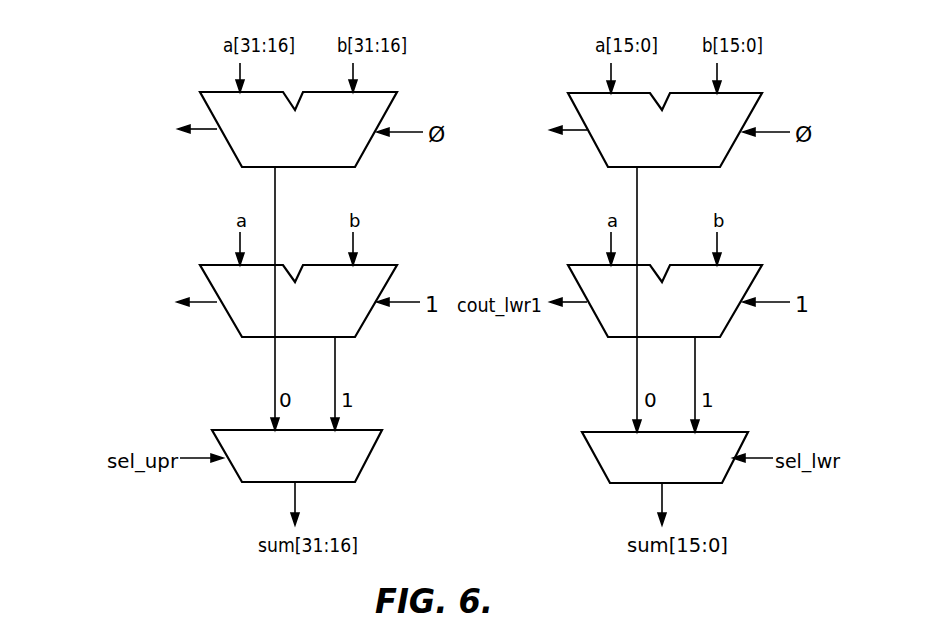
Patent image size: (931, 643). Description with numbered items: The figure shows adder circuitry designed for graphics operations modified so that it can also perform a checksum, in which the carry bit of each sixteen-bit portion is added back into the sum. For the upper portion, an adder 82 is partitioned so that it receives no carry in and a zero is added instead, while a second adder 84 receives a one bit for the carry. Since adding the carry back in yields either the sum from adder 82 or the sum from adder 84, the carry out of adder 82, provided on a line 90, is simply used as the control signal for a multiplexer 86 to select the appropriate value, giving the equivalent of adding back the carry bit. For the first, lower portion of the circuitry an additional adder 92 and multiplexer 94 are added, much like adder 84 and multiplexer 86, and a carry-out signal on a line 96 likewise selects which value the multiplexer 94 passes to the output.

The adder 82 is at (397, 92).
The second adder 84 is at (397, 265).
The multiplexer 86 is at (382, 430).
The line 90 is at (188, 127).
The additional adder 92 is at (772, 254).
The multiplexer 94 is at (748, 432).
The line 96 is at (563, 128).